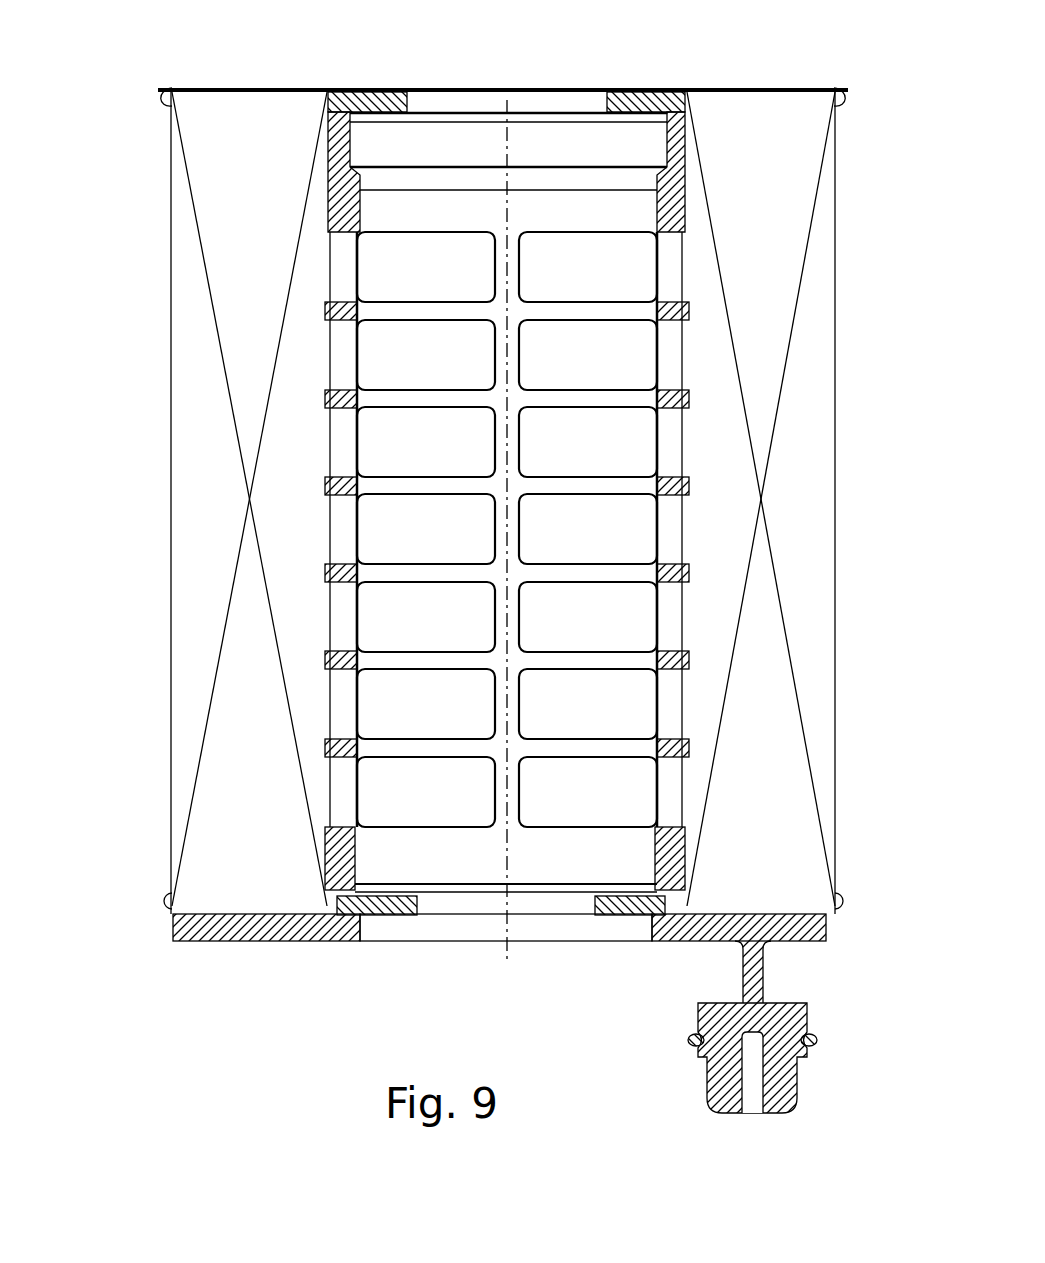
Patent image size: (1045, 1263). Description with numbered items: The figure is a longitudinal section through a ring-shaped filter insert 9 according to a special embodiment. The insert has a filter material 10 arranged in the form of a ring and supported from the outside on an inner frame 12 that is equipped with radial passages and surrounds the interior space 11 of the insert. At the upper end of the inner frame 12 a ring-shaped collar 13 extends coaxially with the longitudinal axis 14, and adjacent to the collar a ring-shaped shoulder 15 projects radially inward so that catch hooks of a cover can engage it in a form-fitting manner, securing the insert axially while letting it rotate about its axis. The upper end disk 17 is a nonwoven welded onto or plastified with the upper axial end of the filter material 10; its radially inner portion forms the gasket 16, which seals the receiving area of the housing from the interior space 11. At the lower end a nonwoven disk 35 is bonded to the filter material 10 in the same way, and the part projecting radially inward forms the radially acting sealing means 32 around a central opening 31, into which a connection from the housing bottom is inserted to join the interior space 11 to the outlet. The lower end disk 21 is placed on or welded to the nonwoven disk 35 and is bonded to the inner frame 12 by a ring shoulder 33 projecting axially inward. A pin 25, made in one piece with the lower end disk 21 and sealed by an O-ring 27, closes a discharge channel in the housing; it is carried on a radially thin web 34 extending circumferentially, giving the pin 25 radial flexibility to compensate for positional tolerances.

The ring-shaped filter insert 9 is at (217, 441).
The filter material 10 is at (818, 272).
The interior space 11 is at (628, 440).
The inner frame 12 is at (331, 648).
The ring-shaped collar 13 is at (665, 138).
The longitudinal axis 14 is at (508, 100).
The ring-shaped shoulder 15 is at (652, 178).
The gasket 16 is at (392, 90).
The upper end disk 17 is at (259, 88).
The lower end disk 21 is at (258, 941).
The pin 25 is at (709, 1086).
The O-ring 27 is at (814, 1050).
The central opening 31 is at (418, 941).
The sealing means 32 is at (325, 892).
The ring shoulder 33 is at (688, 908).
The web 34 is at (752, 981).
The nonwoven disk 35 is at (220, 912).